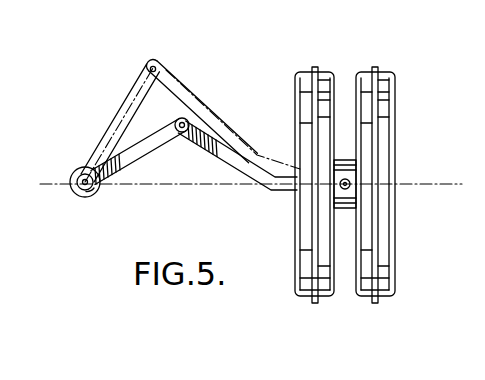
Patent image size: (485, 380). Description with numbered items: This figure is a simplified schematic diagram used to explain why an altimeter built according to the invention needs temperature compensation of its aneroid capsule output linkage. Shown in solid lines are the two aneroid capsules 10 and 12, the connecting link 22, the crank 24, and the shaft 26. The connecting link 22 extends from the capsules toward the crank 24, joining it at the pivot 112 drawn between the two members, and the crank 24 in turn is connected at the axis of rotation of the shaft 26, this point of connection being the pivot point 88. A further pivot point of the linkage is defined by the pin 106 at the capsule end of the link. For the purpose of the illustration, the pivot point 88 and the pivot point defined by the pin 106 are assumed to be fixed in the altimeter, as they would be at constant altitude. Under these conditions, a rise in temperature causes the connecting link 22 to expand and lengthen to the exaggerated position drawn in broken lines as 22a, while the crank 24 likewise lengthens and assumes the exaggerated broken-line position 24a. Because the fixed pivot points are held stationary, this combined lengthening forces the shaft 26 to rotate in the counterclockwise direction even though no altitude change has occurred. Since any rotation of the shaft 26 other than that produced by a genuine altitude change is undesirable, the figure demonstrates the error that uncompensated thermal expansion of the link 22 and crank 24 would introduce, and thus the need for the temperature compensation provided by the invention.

The aneroid capsule 10 is at (320, 80).
The aneroid capsule 12 is at (383, 76).
The connecting link 22 is at (212, 132).
The lengthened connecting link position 22a is at (163, 62).
The crank 24 is at (151, 156).
The lengthened crank position 24a is at (120, 118).
The shaft 26 is at (97, 190).
The pivot point 88 is at (73, 191).
The pin 106 is at (352, 181).
The pivot pin 112 is at (186, 119).